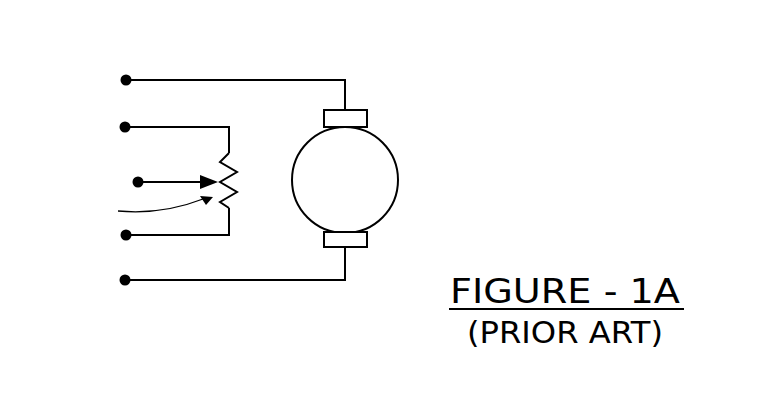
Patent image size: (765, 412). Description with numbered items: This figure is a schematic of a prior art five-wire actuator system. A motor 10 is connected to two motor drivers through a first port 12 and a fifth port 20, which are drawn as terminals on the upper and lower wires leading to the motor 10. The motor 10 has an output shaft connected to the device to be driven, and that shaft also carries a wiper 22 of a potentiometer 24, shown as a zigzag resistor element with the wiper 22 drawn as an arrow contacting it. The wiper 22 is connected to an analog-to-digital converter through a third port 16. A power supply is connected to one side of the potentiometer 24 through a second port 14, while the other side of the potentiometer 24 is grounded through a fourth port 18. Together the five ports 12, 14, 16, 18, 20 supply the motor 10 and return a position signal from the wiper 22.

The motor 10 is at (372, 157).
The first port 12 is at (126, 80).
The second port 14 is at (125, 127).
The third port 16 is at (138, 182).
The fourth port 18 is at (126, 235).
The fifth port 20 is at (125, 280).
The wiper 22 is at (194, 178).
The potentiometer 24 is at (151, 208).